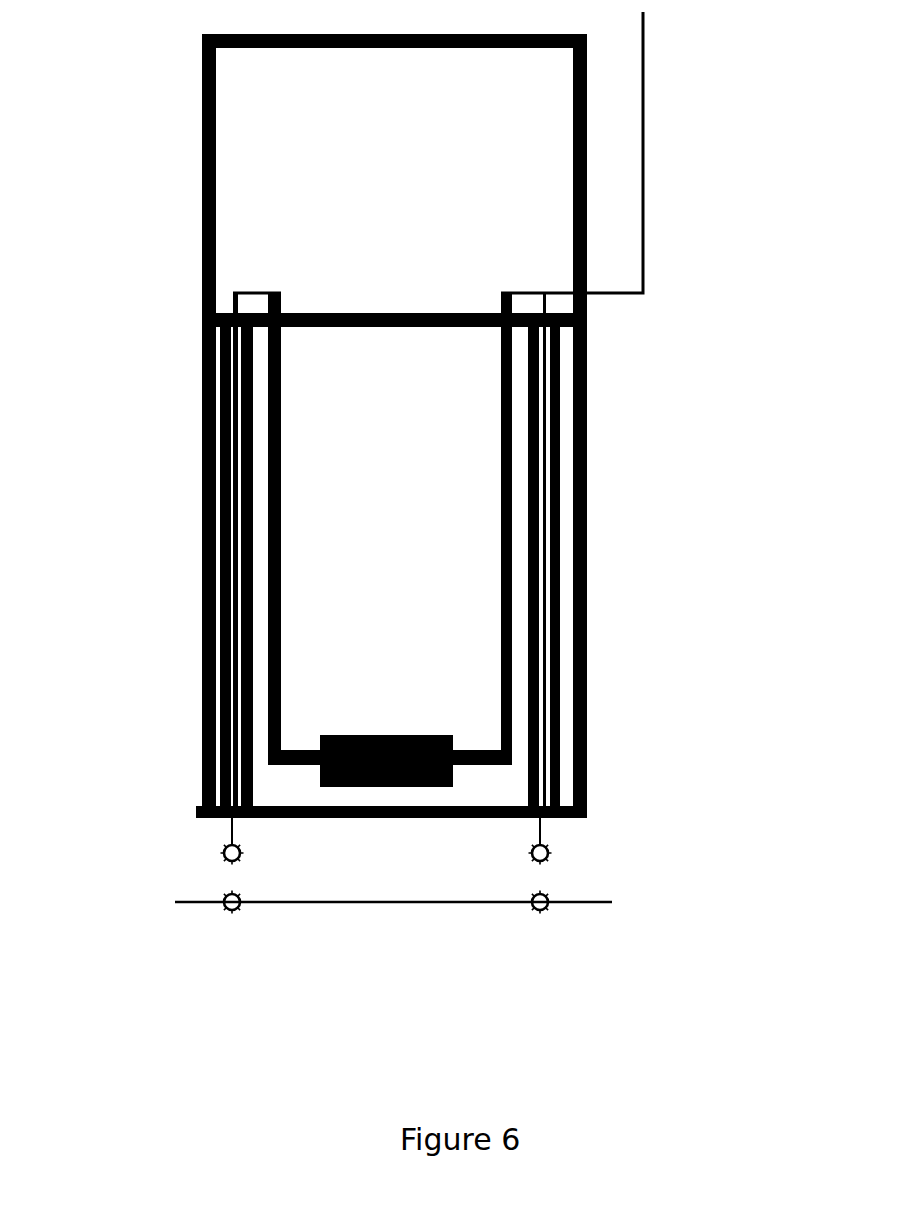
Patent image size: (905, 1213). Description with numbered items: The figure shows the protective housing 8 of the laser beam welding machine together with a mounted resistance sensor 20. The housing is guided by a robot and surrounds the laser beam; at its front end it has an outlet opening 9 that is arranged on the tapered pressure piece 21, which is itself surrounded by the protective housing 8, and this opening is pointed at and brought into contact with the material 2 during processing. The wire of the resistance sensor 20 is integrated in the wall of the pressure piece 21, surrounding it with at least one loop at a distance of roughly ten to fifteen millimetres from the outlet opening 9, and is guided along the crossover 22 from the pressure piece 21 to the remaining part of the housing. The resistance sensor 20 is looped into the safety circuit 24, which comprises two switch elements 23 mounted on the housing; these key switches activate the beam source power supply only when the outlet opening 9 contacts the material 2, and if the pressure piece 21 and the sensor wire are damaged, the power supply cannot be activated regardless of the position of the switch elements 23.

The material 2 is at (470, 902).
The protective housing 8 is at (160, 448).
The outlet opening 9 is at (334, 818).
The resistance sensor 20 is at (392, 735).
The pressure piece 21 is at (587, 517).
The crossover 22 is at (348, 315).
The switch elements 23 is at (222, 843).
The safety circuit 24 is at (648, 137).